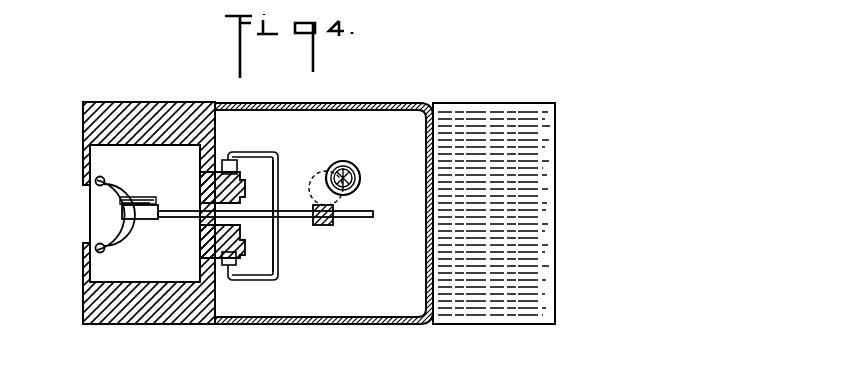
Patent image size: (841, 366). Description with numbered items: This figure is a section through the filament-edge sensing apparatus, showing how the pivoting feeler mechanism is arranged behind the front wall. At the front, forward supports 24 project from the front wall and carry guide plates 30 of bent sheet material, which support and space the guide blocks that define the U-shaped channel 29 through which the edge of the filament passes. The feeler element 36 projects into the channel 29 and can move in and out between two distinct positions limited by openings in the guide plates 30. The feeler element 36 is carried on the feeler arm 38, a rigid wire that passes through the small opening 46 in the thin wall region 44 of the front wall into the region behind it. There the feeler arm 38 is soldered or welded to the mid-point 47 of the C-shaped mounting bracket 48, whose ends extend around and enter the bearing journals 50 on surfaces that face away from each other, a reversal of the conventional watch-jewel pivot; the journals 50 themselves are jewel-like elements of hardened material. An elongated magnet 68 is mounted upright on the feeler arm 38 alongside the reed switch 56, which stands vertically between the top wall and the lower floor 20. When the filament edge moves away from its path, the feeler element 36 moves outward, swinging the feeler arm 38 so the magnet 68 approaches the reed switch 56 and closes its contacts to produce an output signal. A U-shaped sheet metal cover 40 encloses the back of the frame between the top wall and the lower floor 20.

The lower floor 20 is at (472, 115).
The forward supports 24 is at (118, 112).
The U-shaped channel 29 is at (129, 227).
The guide plates 30 is at (82, 158).
The feeler element 36 is at (90, 233).
The feeler arm 38 is at (163, 202).
The sheet metal cover 40 is at (359, 105).
The thin wall region 44 is at (204, 225).
The small opening 46 is at (214, 205).
The mid-point of mounting bracket 47 is at (281, 215).
The C-shaped mounting bracket 48 is at (268, 157).
The bearing journals 50 is at (226, 164).
The reed switch 56 is at (355, 168).
The elongated magnet 68 is at (320, 228).